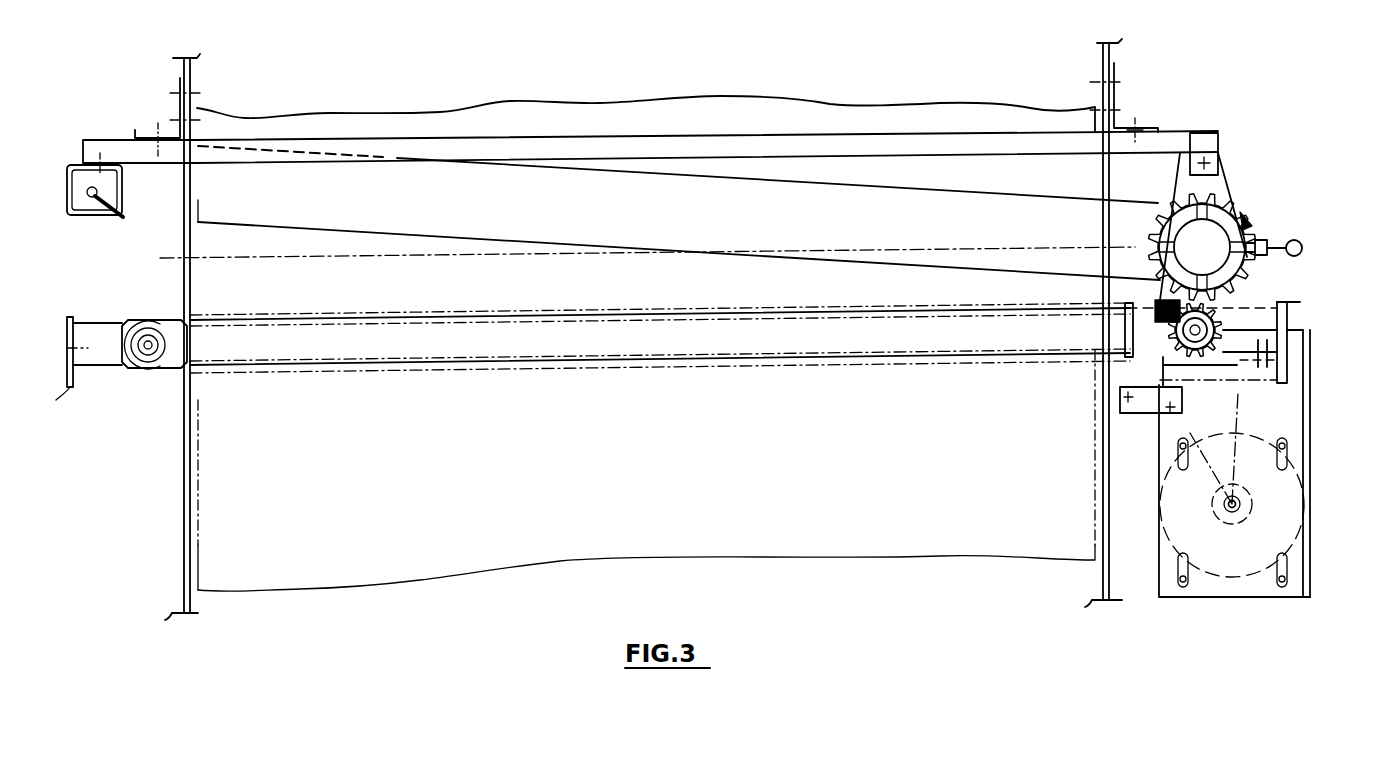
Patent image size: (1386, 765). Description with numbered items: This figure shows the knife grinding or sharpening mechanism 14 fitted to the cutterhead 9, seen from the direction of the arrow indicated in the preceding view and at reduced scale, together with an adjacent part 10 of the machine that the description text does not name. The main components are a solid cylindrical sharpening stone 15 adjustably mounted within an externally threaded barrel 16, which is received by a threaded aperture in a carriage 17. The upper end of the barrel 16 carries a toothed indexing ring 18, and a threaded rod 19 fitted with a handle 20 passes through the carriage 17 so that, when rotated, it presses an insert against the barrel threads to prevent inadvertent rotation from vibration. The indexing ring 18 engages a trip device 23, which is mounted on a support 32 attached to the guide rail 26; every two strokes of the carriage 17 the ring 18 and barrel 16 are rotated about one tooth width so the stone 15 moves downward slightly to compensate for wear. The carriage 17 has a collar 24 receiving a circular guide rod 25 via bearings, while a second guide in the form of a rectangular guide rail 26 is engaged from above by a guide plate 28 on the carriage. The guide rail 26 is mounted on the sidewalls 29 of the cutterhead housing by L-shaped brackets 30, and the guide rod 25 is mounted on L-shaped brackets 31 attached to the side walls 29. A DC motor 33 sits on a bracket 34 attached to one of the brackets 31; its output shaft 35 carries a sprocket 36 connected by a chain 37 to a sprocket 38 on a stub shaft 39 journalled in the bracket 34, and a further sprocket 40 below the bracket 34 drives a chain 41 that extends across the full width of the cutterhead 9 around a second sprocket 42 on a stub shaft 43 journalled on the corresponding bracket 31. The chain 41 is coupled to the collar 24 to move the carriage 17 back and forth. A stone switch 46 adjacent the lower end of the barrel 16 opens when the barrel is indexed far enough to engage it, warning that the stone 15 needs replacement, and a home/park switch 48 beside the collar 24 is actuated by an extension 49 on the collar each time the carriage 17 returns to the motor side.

The cutterhead 9 is at (600, 118).
The guide bar 10 is at (505, 183).
The knife grinding or sharpening mechanism 14 is at (1277, 210).
The sharpening stone 15 is at (1253, 222).
The barrel 16 is at (1237, 217).
The carriage 17 is at (1240, 293).
The toothed indexing ring 18 is at (1277, 221).
The threaded rod 19 is at (1268, 237).
The handle 20 is at (1302, 248).
The trip device 23 is at (103, 214).
The collar 24 is at (1288, 300).
The guide rod 25 is at (688, 347).
The guide rail 26 is at (162, 165).
The guide plate 28 is at (1213, 147).
The sidewalls 29 is at (182, 478).
The L-shaped brackets 30 is at (177, 110).
The L-shaped brackets 31 is at (1347, 338).
The support 32 is at (629, 153).
The DC motor 33 is at (1295, 505).
The bracket 34 is at (1310, 438).
The output shaft 35 is at (1226, 512).
The sprocket 36 is at (1238, 518).
The chain 37 is at (1243, 398).
The sprocket 38 is at (1178, 336).
The stub shaft 39 is at (1287, 347).
The sprocket 40 is at (1092, 362).
The chain 41 is at (453, 370).
The second sprocket 42 is at (133, 357).
The stub shaft 43 is at (148, 330).
The stone switch 46 is at (1165, 300).
The home/park switch 48 is at (1147, 413).
The extension 49 is at (1280, 380).